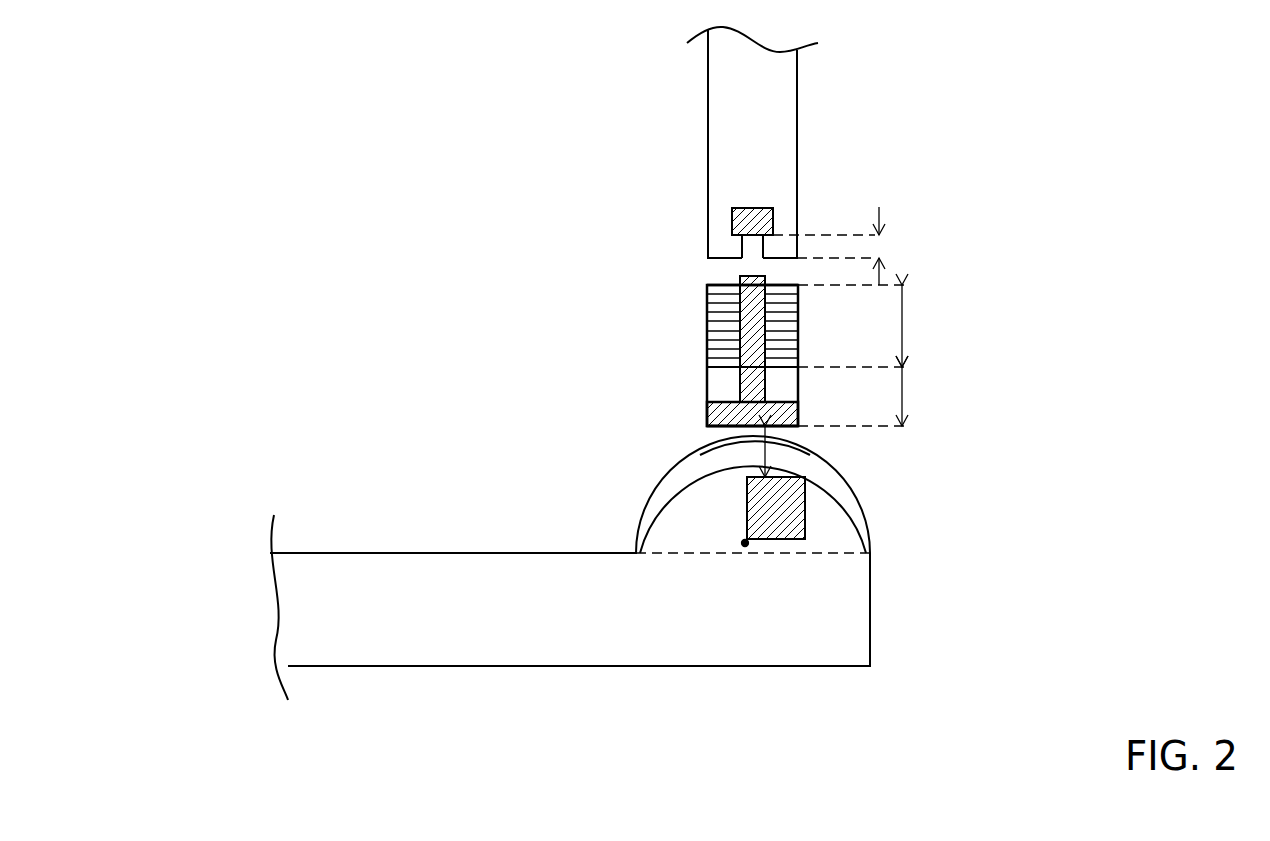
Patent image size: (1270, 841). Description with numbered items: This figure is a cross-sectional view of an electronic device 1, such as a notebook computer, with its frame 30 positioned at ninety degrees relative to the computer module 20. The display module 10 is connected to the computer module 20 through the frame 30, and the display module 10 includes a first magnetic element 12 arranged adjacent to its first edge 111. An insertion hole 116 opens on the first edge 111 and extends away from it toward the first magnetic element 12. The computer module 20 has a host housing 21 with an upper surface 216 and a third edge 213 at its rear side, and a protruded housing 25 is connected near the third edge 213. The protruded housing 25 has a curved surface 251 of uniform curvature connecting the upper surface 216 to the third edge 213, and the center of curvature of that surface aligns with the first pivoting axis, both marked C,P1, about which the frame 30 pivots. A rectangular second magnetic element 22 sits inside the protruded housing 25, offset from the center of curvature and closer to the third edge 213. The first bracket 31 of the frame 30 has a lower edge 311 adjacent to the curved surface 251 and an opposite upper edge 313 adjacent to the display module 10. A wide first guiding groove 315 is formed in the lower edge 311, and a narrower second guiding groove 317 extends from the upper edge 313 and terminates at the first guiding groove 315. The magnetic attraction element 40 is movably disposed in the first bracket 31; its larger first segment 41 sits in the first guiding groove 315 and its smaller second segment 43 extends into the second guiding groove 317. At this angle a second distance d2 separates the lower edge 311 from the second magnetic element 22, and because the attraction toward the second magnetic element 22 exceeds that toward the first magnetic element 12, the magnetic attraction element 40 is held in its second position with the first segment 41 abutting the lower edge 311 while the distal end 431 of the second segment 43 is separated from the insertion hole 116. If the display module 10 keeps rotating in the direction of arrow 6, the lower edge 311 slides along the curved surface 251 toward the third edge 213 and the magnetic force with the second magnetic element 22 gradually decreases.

The electronic device 1 is at (368, 172).
The display module 10 is at (823, 88).
The arrow 6 is at (797, 112).
The first magnetic element 12 is at (738, 210).
The first edge 111 is at (740, 247).
The insertion hole 116 is at (877, 245).
The frame 30 is at (578, 332).
The first bracket 31 is at (707, 317).
The upper edge 313 is at (715, 286).
The magnetic attraction element 40 is at (740, 343).
The distal end 431 is at (745, 276).
The second segment 43 is at (737, 376).
The first segment 41 is at (709, 413).
The lower edge 311 is at (722, 427).
The second guiding groove 317 is at (905, 325).
The first guiding groove 315 is at (905, 393).
The second distance d2 is at (770, 440).
The computer module 20 is at (345, 527).
The upper surface 216 is at (476, 553).
The host housing 21 is at (470, 667).
The third edge 213 is at (870, 612).
The protruded housing 25 is at (860, 508).
The curved surface 251 is at (837, 472).
The second magnetic element 22 is at (783, 515).
The center of curvature and first pivoting axis C,P1 is at (745, 543).